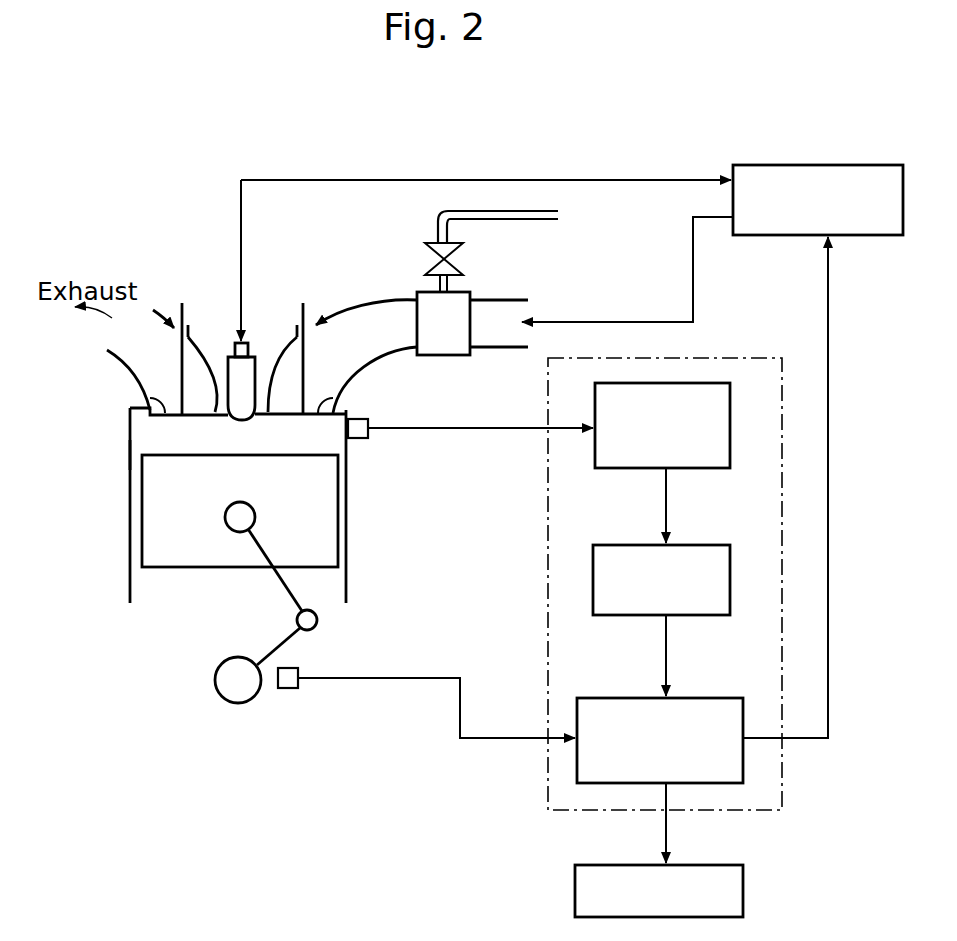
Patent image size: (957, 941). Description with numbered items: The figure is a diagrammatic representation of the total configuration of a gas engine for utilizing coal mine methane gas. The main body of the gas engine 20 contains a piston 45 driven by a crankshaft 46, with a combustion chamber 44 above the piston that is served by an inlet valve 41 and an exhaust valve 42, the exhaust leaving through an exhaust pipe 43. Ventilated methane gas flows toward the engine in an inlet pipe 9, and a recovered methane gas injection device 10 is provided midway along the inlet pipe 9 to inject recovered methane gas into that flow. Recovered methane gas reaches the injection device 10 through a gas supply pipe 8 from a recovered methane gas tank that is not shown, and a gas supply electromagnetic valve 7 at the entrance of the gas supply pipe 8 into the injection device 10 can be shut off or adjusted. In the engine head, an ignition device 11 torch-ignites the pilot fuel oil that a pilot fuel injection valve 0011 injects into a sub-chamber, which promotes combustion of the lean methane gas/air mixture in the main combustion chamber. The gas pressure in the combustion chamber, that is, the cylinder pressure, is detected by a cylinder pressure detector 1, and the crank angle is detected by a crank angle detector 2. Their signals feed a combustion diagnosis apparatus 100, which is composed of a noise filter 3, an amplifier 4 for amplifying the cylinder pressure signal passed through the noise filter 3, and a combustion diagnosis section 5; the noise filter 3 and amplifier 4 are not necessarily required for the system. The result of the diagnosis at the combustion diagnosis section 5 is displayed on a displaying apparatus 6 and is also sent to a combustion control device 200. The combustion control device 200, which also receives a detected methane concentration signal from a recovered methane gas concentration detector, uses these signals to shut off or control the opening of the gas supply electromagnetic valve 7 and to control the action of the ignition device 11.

The cylinder pressure detector 1 is at (357, 438).
The crank angle detector 2 is at (288, 688).
The noise filter 3 is at (627, 470).
The amplifier 4 is at (715, 545).
The combustion diagnosis section 5 is at (717, 698).
The displaying apparatus 6 is at (745, 888).
The gas supply electromagnetic valve 7 is at (437, 263).
The gas supply pipe 8 is at (500, 210).
The inlet pipe 9 is at (378, 343).
The recovered methane gas injection device 10 is at (427, 310).
The ignition device 11 is at (228, 355).
The pilot fuel injection valve 0011 is at (237, 372).
The main body of gas engine 20 is at (107, 502).
The inlet valve 41 is at (318, 403).
The exhaust valve 42 is at (147, 398).
The exhaust pipe 43 is at (148, 361).
The combustion chamber 44 is at (132, 440).
The piston 45 is at (168, 557).
The crankshaft 46 is at (228, 688).
The combustion diagnosis apparatus 100 is at (545, 763).
The combustion control device 200 is at (822, 165).